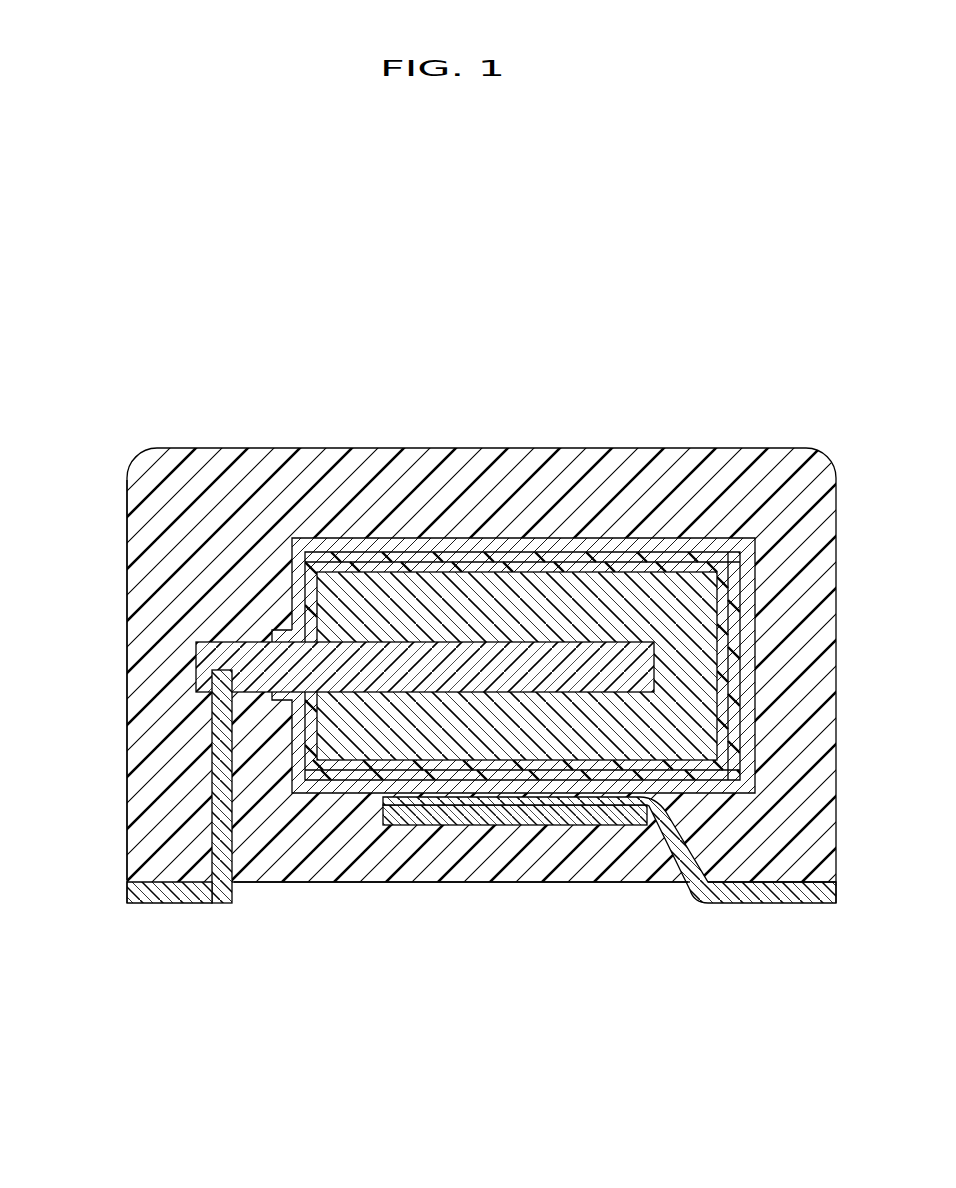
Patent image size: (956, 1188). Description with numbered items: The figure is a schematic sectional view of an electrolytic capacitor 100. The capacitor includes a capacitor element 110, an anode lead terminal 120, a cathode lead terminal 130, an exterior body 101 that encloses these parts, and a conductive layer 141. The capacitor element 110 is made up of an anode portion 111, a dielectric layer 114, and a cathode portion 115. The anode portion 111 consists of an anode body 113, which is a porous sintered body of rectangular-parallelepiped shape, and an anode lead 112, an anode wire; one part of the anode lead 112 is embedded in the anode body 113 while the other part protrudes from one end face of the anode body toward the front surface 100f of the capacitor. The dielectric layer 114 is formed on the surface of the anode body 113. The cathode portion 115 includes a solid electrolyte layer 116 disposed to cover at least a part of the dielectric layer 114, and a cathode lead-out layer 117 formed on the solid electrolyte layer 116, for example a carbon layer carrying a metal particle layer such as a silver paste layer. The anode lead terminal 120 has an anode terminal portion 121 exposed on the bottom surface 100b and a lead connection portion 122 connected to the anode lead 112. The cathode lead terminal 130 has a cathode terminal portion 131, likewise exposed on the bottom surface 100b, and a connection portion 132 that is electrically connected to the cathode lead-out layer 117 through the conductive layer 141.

The electrolytic capacitor 100 is at (110, 358).
The front surface 100f is at (125, 670).
The bottom surface 100b is at (325, 884).
The exterior body 101 is at (202, 457).
The capacitor element 110 is at (475, 545).
The anode portion 111 is at (456, 548).
The anode lead 112 is at (437, 657).
The anode body 113 is at (478, 588).
The dielectric layer 114 is at (533, 557).
The cathode portion 115 is at (513, 565).
The solid electrolyte layer 116 is at (625, 557).
The cathode lead-out layer 117 is at (702, 543).
The anode lead terminal 120 is at (184, 837).
The anode terminal portion 121 is at (219, 895).
The lead connection portion 122 is at (212, 695).
The cathode lead terminal 130 is at (609, 912).
The cathode terminal portion 131 is at (763, 928).
The connection portion 132 is at (551, 806).
The conductive layer 141 is at (487, 825).